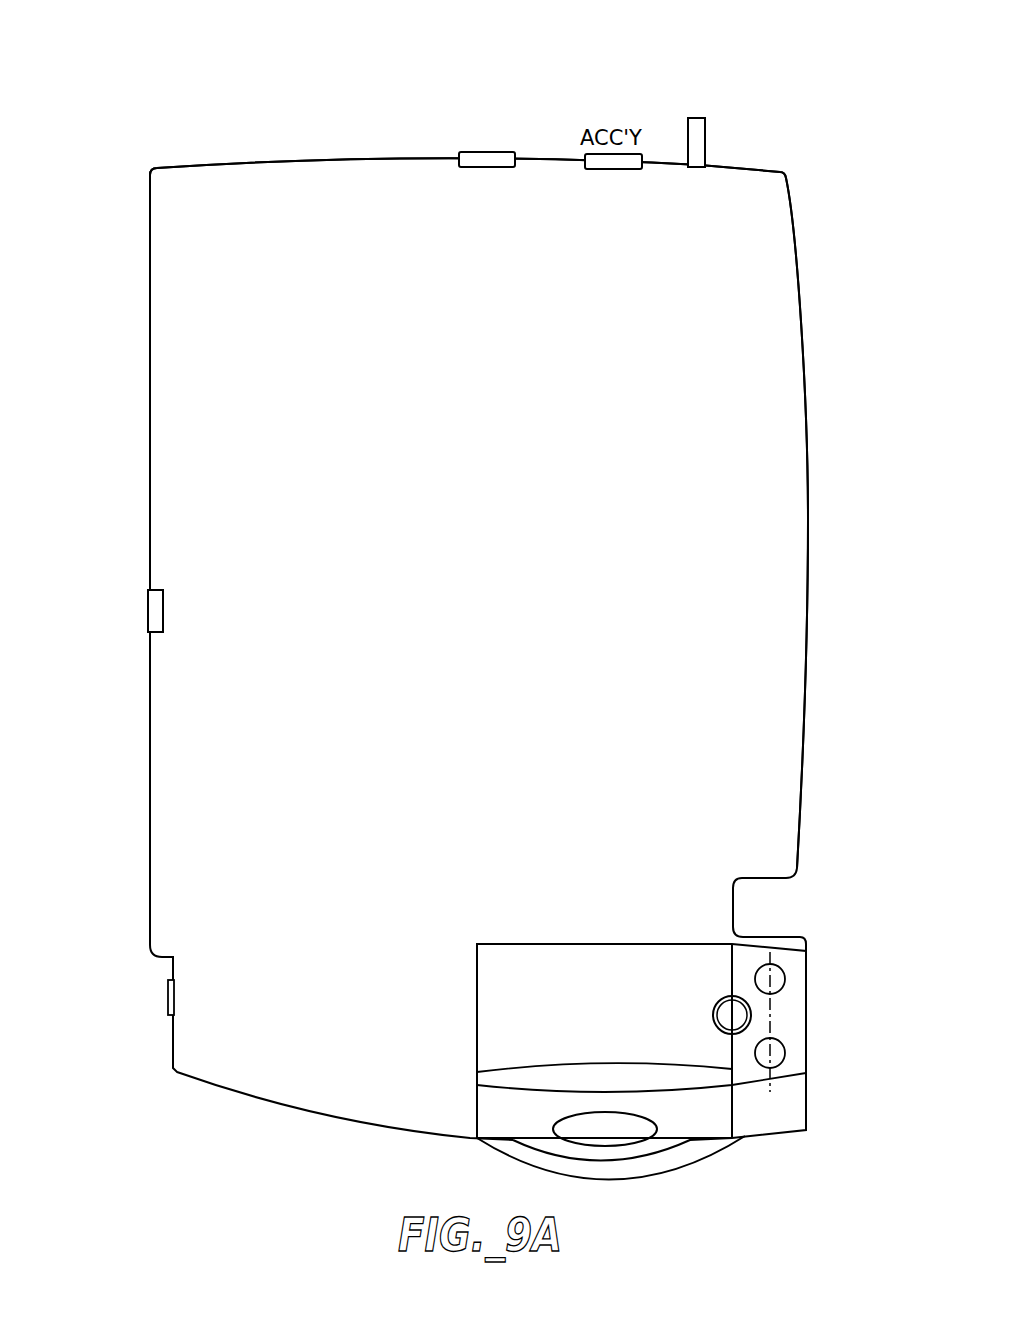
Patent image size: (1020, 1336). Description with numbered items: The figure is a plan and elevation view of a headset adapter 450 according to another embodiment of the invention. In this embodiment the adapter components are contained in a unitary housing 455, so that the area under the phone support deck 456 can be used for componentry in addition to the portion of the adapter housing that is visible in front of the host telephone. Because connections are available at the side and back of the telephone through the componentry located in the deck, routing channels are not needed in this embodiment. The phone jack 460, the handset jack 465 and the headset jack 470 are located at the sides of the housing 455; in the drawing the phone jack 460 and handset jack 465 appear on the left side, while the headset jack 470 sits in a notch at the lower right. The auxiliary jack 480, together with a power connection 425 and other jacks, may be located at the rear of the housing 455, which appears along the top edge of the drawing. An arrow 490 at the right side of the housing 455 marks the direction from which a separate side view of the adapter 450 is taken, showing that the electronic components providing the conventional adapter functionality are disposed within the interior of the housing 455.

The headset adapter 450 is at (333, 108).
The unitary housing 455 is at (800, 268).
The arrow 490 is at (825, 430).
The phone support deck 456 is at (695, 560).
The headset jack 470 is at (734, 895).
The auxiliary jack 480 is at (459, 155).
The power connector 425 is at (706, 152).
The phone jack 460 is at (148, 615).
The handset jack 465 is at (168, 1000).